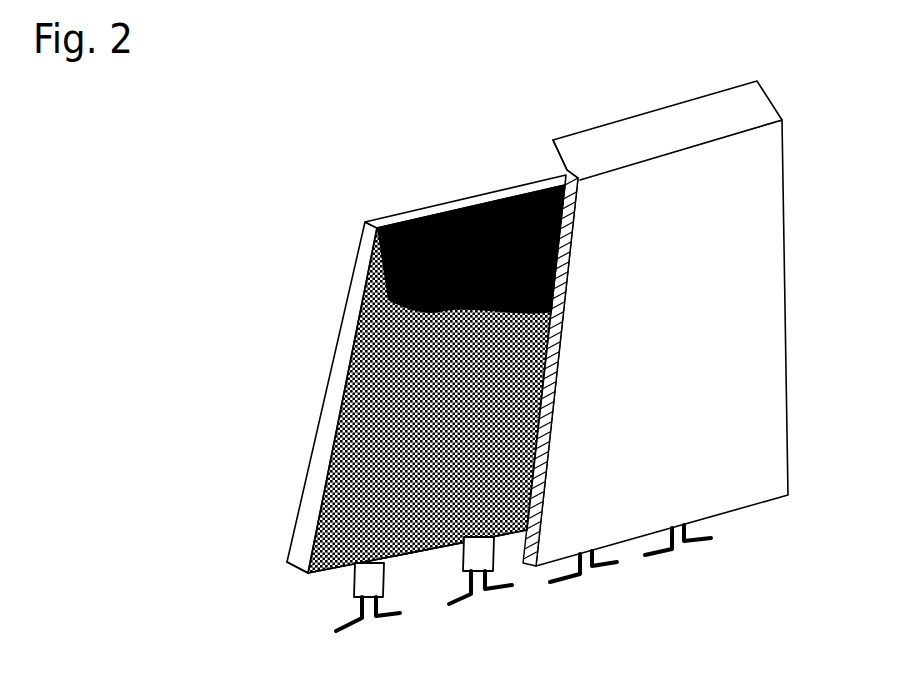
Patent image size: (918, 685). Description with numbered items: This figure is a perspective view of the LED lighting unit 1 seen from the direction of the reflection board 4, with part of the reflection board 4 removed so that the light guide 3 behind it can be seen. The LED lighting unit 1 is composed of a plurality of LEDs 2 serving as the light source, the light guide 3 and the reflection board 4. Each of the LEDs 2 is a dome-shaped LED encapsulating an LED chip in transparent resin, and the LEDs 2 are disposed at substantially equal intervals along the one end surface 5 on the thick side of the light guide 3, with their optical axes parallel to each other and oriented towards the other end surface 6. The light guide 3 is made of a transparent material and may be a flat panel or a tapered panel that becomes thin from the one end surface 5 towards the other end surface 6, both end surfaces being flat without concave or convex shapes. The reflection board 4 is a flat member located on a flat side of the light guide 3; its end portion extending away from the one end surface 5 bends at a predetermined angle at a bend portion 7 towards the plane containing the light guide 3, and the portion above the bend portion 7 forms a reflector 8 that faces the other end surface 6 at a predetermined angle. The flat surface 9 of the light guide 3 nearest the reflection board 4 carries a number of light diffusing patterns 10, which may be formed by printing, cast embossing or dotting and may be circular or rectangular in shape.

The LED lighting unit 1 is at (302, 182).
The LEDs 2 is at (363, 575).
The light guide 3 is at (302, 528).
The reflection board 4 is at (773, 472).
The one end surface 5 is at (410, 560).
The other end surface 6 is at (423, 215).
The bend portion 7 is at (750, 108).
The reflector 8 is at (553, 160).
The flat surface 9 is at (348, 378).
The light diffusing patterns 10 is at (320, 575).